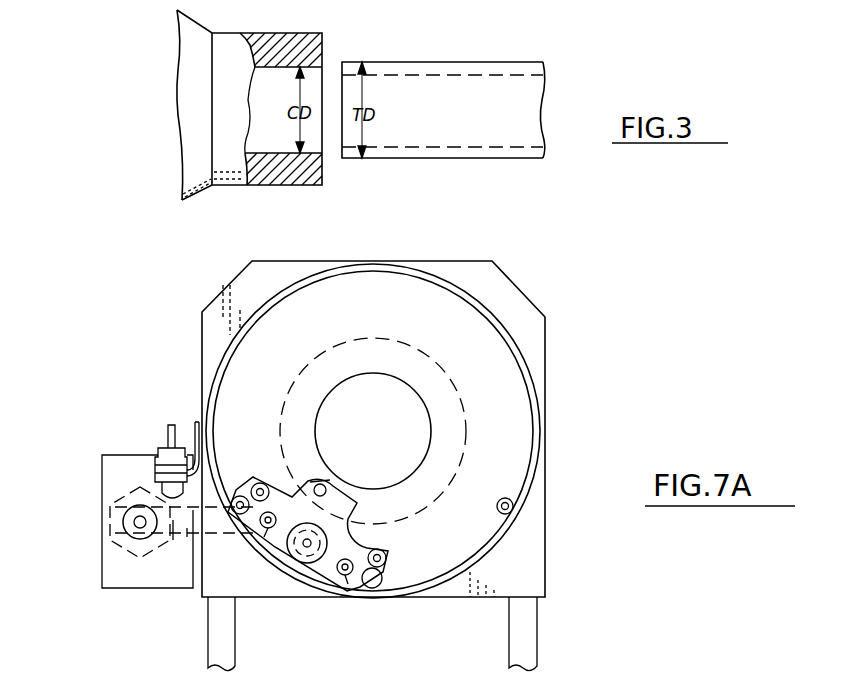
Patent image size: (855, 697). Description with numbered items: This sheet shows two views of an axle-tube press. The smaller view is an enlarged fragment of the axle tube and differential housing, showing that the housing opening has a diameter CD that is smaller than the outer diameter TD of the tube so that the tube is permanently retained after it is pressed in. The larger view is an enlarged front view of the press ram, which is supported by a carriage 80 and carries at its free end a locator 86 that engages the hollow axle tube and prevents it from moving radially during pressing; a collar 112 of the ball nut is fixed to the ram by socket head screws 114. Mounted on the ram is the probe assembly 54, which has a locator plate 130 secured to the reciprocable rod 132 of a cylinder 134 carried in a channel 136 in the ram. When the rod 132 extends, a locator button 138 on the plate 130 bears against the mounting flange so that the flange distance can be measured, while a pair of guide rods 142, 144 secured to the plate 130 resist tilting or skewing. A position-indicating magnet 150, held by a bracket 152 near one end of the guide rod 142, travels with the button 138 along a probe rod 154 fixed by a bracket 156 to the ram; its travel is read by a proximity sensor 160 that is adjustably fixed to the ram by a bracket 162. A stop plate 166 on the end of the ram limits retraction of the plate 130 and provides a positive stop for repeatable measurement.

The probe assembly 54 is at (177, 623).
The carriage 80 is at (213, 630).
The locator 86 is at (417, 400).
The collar 112 is at (522, 437).
The socket head screws 114 is at (512, 503).
The locator plate 130 is at (352, 512).
The reciprocable rod 132 is at (305, 562).
The cylinder 134 is at (320, 594).
The channel 136 is at (278, 548).
The locator button 138 is at (333, 478).
The guide rod 142 is at (253, 538).
The guide rod 144 is at (378, 590).
The position-indicating magnet 150 is at (120, 530).
The bracket 152 is at (190, 530).
The probe rod 154 is at (137, 530).
The bracket 156 is at (120, 462).
The proximity sensor 160 is at (158, 452).
The bracket 162 is at (197, 420).
The stop plate 166 is at (384, 548).